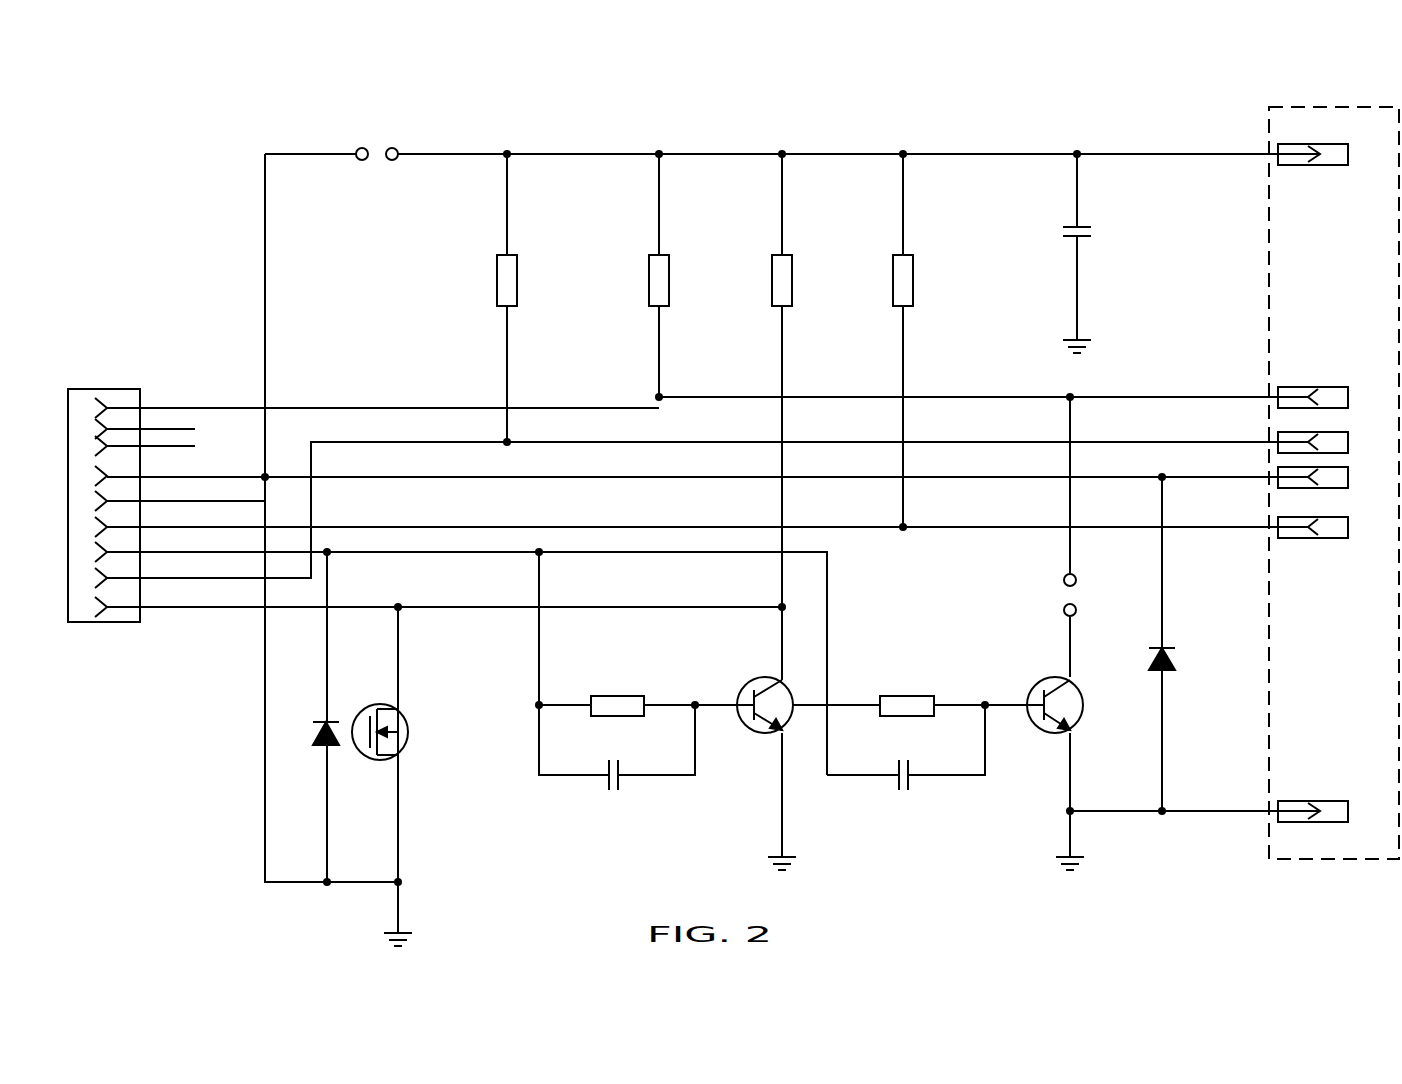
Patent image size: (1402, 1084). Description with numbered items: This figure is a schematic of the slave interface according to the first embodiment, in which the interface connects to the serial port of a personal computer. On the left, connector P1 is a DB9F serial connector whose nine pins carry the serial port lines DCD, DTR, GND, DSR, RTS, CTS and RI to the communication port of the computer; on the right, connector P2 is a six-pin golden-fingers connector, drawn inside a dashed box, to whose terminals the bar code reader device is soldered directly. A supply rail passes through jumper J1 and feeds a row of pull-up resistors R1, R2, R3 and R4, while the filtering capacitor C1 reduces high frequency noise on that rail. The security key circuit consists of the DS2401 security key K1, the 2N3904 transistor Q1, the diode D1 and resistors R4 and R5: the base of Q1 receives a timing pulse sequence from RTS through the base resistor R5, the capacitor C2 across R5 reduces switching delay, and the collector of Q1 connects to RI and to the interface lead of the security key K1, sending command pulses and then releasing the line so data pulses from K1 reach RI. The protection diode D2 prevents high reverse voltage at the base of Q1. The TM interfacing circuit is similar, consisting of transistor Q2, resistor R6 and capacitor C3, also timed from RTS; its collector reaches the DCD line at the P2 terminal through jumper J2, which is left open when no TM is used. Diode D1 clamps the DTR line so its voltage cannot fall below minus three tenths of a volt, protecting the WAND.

The connector P1 is at (80, 408).
The connector P2 is at (1343, 132).
The jumper J1 is at (377, 141).
The jumper J2 is at (1084, 595).
The resistor R1 is at (494, 280).
The resistor R2 is at (646, 280).
The resistor R3 is at (889, 280).
The resistor R4 is at (769, 280).
The base resistor R5 is at (617, 693).
The resistor R6 is at (907, 694).
The filtering capacitor C1 is at (1064, 233).
The capacitor C2 is at (600, 784).
The capacitor C3 is at (890, 784).
The diode D1 is at (1174, 661).
The protection diode D2 is at (314, 747).
The security key K1 is at (391, 730).
The transistor Q1 is at (762, 693).
The transistor Q2 is at (1055, 693).